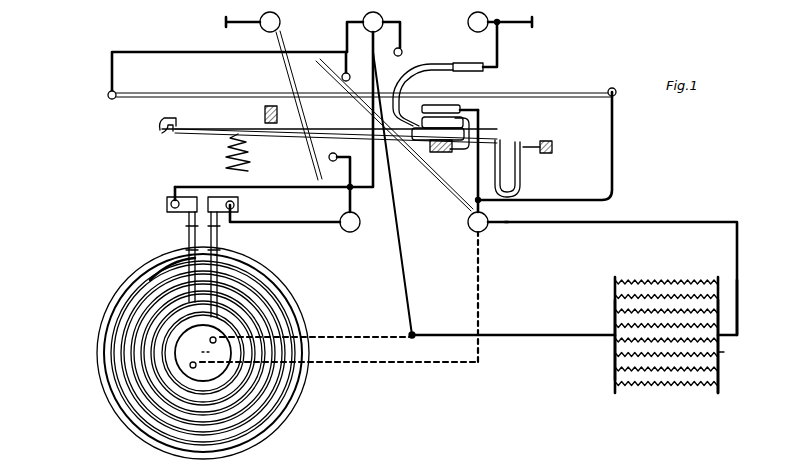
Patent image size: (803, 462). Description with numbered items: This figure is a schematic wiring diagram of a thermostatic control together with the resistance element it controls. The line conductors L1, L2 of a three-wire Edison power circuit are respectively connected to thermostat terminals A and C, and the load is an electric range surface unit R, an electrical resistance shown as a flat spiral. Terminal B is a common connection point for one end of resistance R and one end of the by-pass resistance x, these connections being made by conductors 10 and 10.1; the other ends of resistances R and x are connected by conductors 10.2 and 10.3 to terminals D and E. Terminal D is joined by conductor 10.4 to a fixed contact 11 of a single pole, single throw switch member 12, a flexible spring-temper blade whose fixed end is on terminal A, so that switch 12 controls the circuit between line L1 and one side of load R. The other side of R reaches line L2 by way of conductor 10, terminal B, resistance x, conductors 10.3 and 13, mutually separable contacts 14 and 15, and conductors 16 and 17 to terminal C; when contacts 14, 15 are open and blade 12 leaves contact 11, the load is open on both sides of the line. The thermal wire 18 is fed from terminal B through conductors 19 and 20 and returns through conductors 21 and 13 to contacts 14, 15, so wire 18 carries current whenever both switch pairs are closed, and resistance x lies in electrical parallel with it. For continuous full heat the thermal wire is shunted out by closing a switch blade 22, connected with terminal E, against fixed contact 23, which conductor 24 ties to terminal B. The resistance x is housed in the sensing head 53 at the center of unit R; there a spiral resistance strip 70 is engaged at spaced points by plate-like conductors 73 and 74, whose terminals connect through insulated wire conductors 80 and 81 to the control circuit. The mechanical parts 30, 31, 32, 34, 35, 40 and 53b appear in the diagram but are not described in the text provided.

The line conductor L1 is at (228, 24).
The line conductor L2 is at (522, 24).
The thermostat terminal A is at (270, 22).
The thermostat terminal B is at (373, 22).
The thermostat terminal C is at (478, 22).
The thermostat terminal D is at (350, 209).
The thermostat terminal E is at (478, 222).
The conductor 10 is at (270, 190).
The conductor 10.1 is at (404, 293).
The conductor 10.2 is at (280, 224).
The conductor 10.3 is at (588, 222).
The conductor 10.4 is at (362, 212).
The fixed contact 11 is at (326, 158).
The switch member 12 is at (302, 140).
The conductor 13 is at (497, 218).
The contact 14 is at (460, 105).
The contact 15 is at (472, 125).
The conductor 16 is at (450, 67).
The conductor 17 is at (502, 41).
The thermal wire 18 is at (162, 92).
The conductor 19 is at (403, 30).
The conductor 20 is at (161, 50).
The conductor 21 is at (613, 154).
The switch blade 22 is at (444, 204).
The fixed contact 23 is at (342, 77).
The conductor 24 is at (336, 48).
The lever 30 is at (200, 134).
The insulator 31 is at (444, 141).
The insulator 32 is at (264, 115).
The spring 34 is at (236, 152).
The bimetal spring 35 is at (522, 162).
The lever end 40 is at (150, 135).
The sensing head 53 is at (205, 355).
The heating element 53b is at (678, 424).
The spiral resistance strip 70 is at (678, 274).
The plate-like conductor 73 is at (615, 370).
The plate-like conductor 74 is at (720, 372).
The insulated wire conductor 80 is at (570, 335).
The insulated wire conductor 81 is at (739, 285).
The surface unit R is at (160, 273).
The by-pass resistance x is at (726, 349).